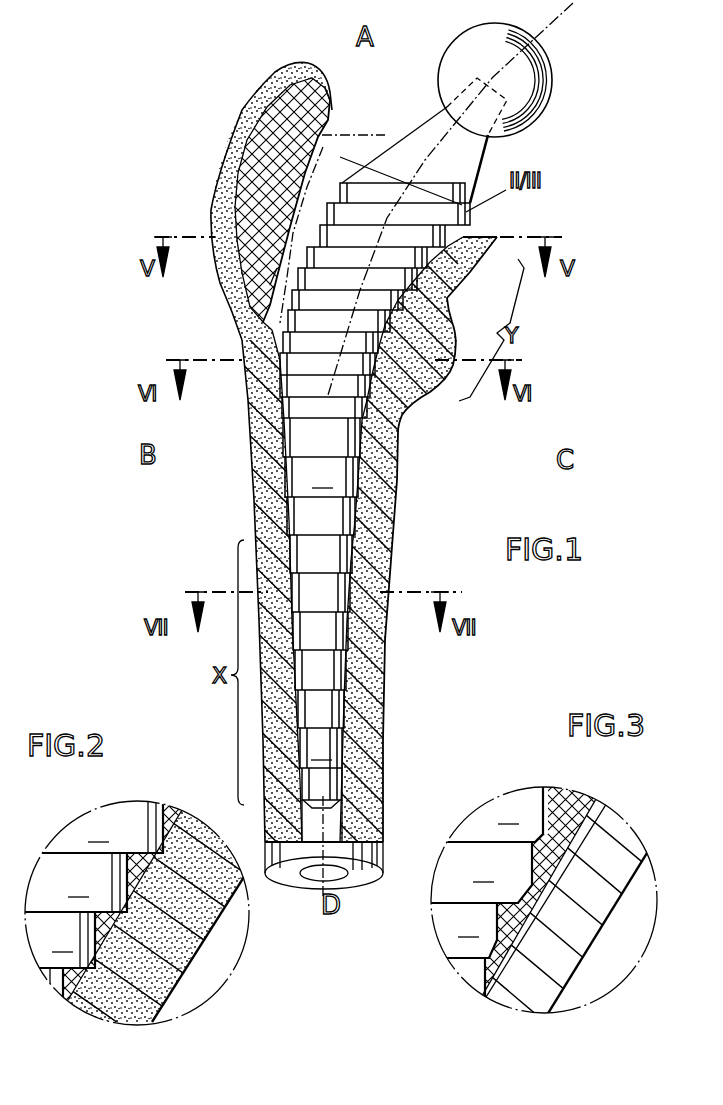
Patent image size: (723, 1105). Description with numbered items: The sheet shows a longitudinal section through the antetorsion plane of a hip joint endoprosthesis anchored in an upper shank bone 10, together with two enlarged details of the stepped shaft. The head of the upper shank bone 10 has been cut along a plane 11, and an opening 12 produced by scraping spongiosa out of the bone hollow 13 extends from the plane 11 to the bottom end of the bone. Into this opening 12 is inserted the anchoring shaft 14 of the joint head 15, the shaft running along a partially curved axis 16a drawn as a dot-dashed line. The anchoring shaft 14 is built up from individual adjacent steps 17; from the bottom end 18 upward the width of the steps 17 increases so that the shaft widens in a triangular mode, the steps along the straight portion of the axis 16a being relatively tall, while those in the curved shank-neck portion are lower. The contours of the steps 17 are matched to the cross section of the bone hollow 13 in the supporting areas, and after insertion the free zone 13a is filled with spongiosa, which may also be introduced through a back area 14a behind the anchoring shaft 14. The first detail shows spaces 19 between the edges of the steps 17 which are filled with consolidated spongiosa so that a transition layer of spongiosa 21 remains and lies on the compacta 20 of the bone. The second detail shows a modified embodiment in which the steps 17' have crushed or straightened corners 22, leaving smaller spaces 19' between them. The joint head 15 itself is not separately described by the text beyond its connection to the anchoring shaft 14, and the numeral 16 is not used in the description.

In FIG. 1, the upper shank bone 10 is at (406, 547).
In FIG. 1, the plane 11 is at (483, 236).
In FIG. 1, the opening 12 is at (338, 150).
In FIG. 1, the bone hollow 13 is at (337, 822).
In FIG. 1, the free zone 13a is at (288, 216).
In FIG. 1, the anchoring shaft 14 is at (283, 482).
In FIG. 1, the back area 14a is at (275, 150).
In FIG. 1, the joint head 15 is at (533, 80).
In FIG. 1, the joint head 16 is at (403, 92).
In FIG. 1, the axis 16a is at (545, 27).
In FIG. 1, the steps 17 is at (375, 486).
In FIG. 2, the steps 17 is at (89, 902).
In FIG. 3, the steps 17' is at (486, 897).
In FIG. 1, the bottom end 18 is at (277, 268).
In FIG. 2, the spaces 19 is at (111, 892).
In FIG. 3, the spaces 19' is at (529, 886).
In FIG. 1, the compacta 20 is at (365, 772).
In FIG. 2, the compacta 20 is at (192, 938).
In FIG. 3, the compacta 20 is at (593, 912).
In FIG. 2, the transition layer of spongiosa 21 is at (180, 808).
In FIG. 3, the transition layer of spongiosa 21 is at (588, 802).
In FIG. 3, the crushed or straightened corners 22 is at (560, 818).